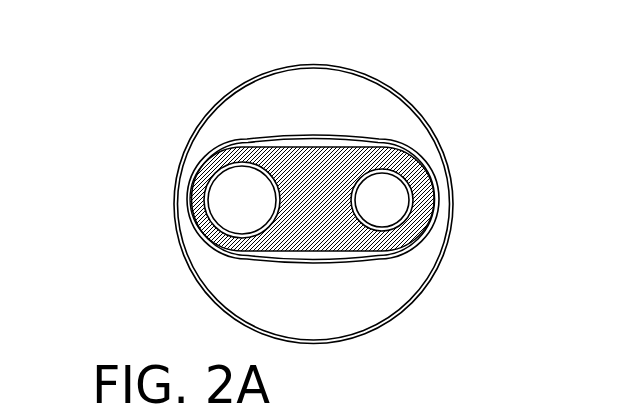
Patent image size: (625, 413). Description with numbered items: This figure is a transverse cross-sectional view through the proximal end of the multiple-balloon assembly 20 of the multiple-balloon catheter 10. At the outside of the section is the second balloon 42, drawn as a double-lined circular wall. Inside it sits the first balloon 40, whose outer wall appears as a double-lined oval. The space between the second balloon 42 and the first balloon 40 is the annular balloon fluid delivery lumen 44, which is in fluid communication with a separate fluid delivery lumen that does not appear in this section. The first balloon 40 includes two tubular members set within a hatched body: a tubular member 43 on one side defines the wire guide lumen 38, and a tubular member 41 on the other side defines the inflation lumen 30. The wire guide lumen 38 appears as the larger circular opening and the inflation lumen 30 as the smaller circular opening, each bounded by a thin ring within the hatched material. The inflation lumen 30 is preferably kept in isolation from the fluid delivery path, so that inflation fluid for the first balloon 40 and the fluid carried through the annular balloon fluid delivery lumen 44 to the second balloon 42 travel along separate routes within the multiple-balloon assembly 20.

The multiple-balloon catheter 10 is at (453, 128).
The multiple-balloon assembly 20 is at (167, 193).
The second balloon 42 is at (405, 100).
The annular balloon fluid delivery lumen 44 is at (331, 120).
The first balloon 40 is at (267, 138).
The tubular member 43 is at (205, 243).
The tubular member 41 is at (405, 225).
The wire guide lumen 38 is at (255, 216).
The inflation lumen 30 is at (397, 209).